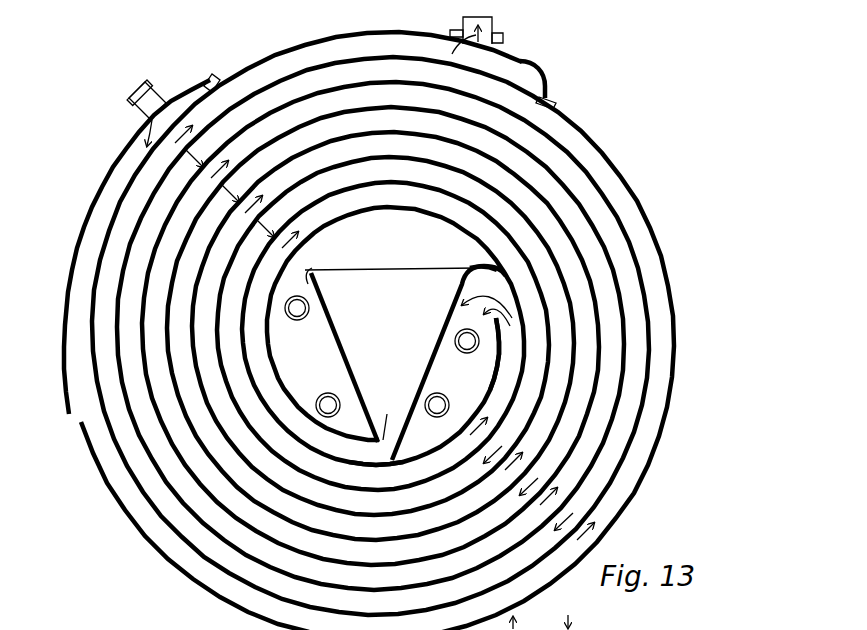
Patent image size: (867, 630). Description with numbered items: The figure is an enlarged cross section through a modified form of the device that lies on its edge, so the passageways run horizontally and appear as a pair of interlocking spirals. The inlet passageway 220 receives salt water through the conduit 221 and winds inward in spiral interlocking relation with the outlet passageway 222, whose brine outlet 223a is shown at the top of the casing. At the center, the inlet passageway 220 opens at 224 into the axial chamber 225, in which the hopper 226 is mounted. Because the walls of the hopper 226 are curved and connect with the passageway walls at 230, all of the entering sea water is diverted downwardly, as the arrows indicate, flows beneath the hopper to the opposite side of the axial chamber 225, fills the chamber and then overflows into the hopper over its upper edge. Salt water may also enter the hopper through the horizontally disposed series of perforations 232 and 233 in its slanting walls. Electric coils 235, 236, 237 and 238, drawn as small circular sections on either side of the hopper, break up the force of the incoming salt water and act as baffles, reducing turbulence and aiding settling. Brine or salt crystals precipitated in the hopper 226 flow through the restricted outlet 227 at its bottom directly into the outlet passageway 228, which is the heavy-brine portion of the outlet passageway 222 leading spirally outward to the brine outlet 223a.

The inlet passageway 220 is at (180, 243).
The conduit 221 is at (133, 101).
The outlet passageway 222 is at (395, 190).
The brine outlet 223a is at (498, 31).
The opening of inlet passageway 224 is at (496, 324).
The axial chamber 225 is at (487, 397).
The hopper 226 is at (408, 381).
The restricted outlet 227 is at (389, 418).
The outlet passageway for brine 228 is at (372, 452).
The connection of hopper walls with passageway walls 230 is at (497, 268).
The perforations 232 is at (444, 298).
The perforations 233 is at (328, 298).
The electric coil 235 is at (301, 321).
The electric coil 236 is at (327, 393).
The electric coil 237 is at (460, 351).
The electric coil 238 is at (437, 417).